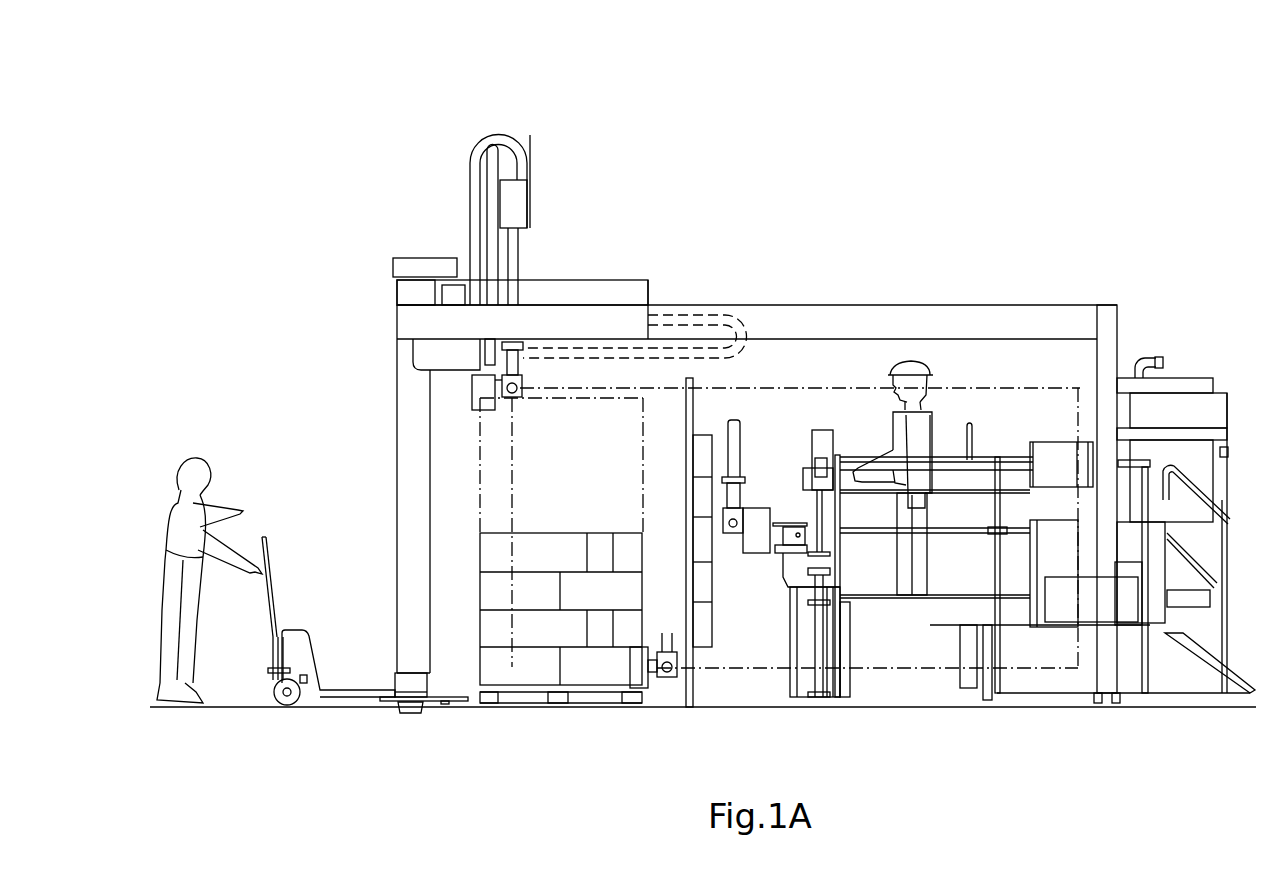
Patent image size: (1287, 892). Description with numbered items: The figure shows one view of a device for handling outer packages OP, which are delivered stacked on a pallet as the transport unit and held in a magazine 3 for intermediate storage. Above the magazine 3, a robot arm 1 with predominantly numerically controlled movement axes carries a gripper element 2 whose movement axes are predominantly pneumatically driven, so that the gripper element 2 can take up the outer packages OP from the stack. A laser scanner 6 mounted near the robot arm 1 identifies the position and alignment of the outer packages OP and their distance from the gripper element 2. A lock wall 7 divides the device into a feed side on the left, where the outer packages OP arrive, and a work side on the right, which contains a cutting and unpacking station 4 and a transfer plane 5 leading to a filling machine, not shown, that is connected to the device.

The robot arm 1 is at (517, 210).
The gripper element 2 is at (520, 380).
The magazine 3 is at (713, 623).
The cutting and unpacking station 4 is at (830, 415).
The transfer plane 5 is at (977, 415).
The laser scanner 6 is at (403, 265).
The lock wall 7 is at (695, 413).
The outer packages OP is at (600, 548).